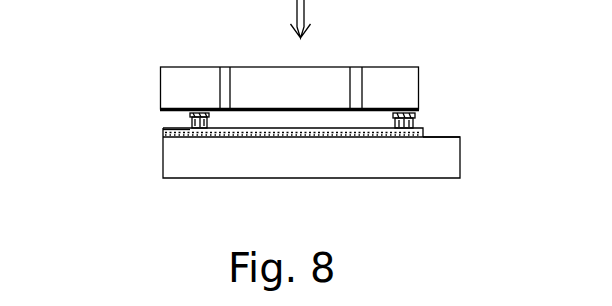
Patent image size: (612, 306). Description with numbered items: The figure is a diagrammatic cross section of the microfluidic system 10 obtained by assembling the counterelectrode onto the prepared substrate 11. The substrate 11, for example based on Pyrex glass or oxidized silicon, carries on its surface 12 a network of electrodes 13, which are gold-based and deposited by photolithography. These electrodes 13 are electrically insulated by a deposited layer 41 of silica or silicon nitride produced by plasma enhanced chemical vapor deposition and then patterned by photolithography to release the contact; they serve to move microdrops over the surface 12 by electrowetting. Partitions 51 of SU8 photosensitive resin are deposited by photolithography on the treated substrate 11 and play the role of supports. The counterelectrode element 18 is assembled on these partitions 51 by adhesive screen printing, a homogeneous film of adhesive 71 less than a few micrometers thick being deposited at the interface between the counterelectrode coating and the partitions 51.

The microfluidic system 10 is at (118, 197).
The substrate 11 is at (425, 181).
The surface 12 is at (175, 134).
The electrodes 13 is at (337, 137).
The semiconductor chips 18 is at (222, 67).
The deposited layer 41 is at (265, 137).
The partitions 51 is at (197, 137).
The film of adhesive 71 is at (190, 115).